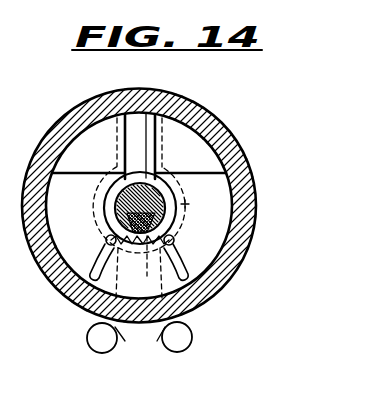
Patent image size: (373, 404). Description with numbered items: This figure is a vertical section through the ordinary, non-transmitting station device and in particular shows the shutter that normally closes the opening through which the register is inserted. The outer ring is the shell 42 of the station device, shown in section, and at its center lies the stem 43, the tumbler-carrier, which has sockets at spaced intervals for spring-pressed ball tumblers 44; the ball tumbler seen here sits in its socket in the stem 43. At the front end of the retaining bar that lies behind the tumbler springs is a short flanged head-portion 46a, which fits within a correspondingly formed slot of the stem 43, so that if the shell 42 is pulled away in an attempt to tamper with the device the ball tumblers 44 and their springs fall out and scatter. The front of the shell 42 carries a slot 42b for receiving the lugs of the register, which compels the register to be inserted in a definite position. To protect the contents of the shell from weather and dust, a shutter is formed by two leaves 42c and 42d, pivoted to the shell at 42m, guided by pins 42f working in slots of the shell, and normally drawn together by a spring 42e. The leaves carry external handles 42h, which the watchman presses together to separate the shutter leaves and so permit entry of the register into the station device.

The shell 42 is at (210, 130).
The slot 42b is at (133, 138).
The shutter leaf 42c is at (190, 204).
The shutter leaf 42d is at (48, 240).
The spring 42e is at (174, 241).
The pins 42f is at (168, 250).
The external handles 42h is at (170, 333).
The pivot 42m is at (205, 308).
The stem 43 is at (163, 212).
The ball tumblers 44 is at (114, 178).
The flanged head-portion 46a is at (123, 221).